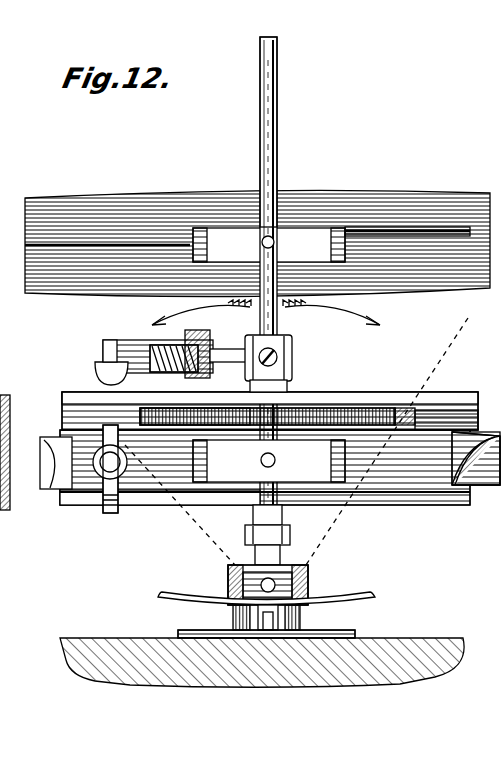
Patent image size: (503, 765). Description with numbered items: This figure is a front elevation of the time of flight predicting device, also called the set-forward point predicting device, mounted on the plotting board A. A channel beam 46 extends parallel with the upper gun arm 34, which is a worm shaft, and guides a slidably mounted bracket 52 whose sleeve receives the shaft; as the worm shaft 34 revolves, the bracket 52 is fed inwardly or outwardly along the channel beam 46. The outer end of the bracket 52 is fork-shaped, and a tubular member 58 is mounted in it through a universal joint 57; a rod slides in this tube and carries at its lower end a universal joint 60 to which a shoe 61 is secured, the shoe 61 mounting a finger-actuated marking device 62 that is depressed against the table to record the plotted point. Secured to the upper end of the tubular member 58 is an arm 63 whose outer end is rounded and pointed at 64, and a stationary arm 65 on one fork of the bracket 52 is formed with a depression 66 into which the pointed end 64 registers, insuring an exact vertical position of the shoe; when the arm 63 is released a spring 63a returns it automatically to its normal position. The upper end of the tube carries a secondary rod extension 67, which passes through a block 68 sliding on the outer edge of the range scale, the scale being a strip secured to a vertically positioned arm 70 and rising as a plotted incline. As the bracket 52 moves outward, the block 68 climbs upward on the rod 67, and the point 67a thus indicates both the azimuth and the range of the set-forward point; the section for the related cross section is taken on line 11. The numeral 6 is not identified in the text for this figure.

The section line 11 is at (268, 37).
The secondary rod extension 67 is at (266, 136).
The point of extension shaft 67a is at (284, 212).
The vertically positioned arm 70 is at (97, 205).
The sliding block 68 is at (331, 244).
The upper gun arm 34 is at (95, 250).
The frame rail 6 is at (5, 443).
The arm 63 is at (101, 352).
The spring 63a is at (195, 401).
The pointed end 64 is at (95, 366).
The tubular member 58 is at (280, 398).
The channel beam 46 is at (445, 320).
The bracket 52 is at (192, 450).
The universal joint 57 is at (251, 463).
The depression 66 is at (62, 488).
The stationary arm 65 is at (110, 513).
The universal joint 60 is at (283, 585).
The shoe 61 is at (212, 630).
The finger-actuated marking device 62 is at (280, 620).
The plotting board A is at (262, 675).